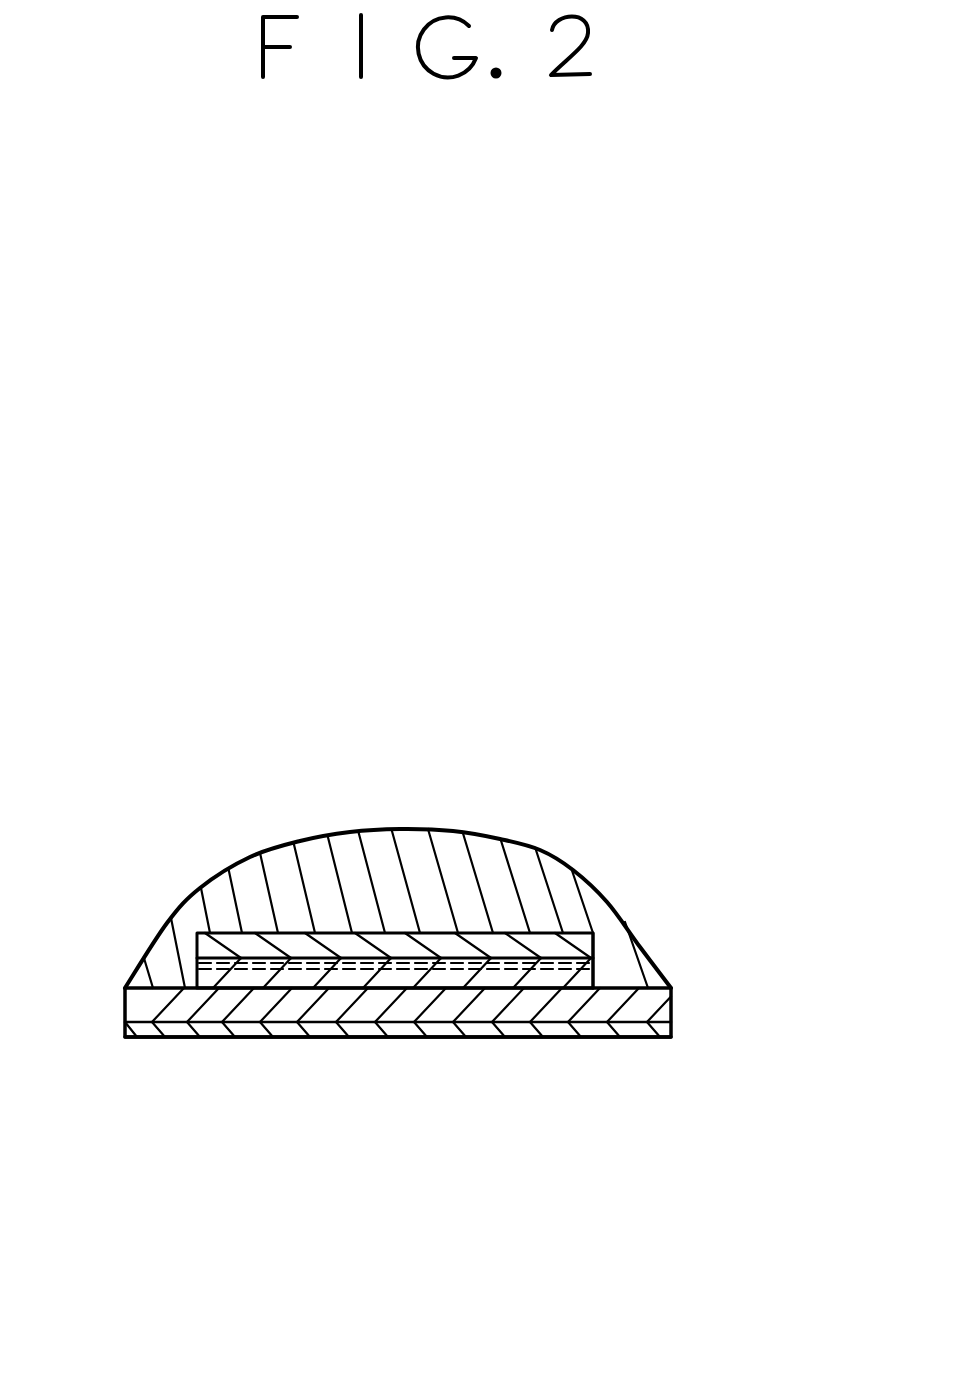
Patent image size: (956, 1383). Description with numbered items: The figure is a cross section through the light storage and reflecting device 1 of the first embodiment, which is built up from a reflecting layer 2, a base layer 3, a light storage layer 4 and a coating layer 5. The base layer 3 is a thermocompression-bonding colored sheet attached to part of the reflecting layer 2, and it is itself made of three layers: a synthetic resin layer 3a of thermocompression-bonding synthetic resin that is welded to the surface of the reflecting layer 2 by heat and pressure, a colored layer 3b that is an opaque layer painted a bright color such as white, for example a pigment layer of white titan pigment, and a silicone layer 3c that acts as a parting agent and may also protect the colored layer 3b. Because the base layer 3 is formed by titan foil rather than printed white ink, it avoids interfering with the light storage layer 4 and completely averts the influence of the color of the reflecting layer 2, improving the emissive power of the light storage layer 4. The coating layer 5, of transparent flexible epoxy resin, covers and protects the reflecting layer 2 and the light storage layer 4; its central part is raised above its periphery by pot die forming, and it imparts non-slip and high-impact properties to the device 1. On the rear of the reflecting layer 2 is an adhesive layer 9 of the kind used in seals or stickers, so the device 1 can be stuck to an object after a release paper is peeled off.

The light storage and reflecting device 1 is at (654, 722).
The reflecting layer 2 is at (398, 1122).
The base layer 3 is at (312, 817).
The synthetic resin layer 3a is at (339, 897).
The colored layer 3b is at (365, 859).
The silicone layer 3c is at (395, 824).
The light storage layer 4 is at (606, 897).
The coating layer 5 is at (398, 819).
The adhesive layer 9 is at (398, 1133).